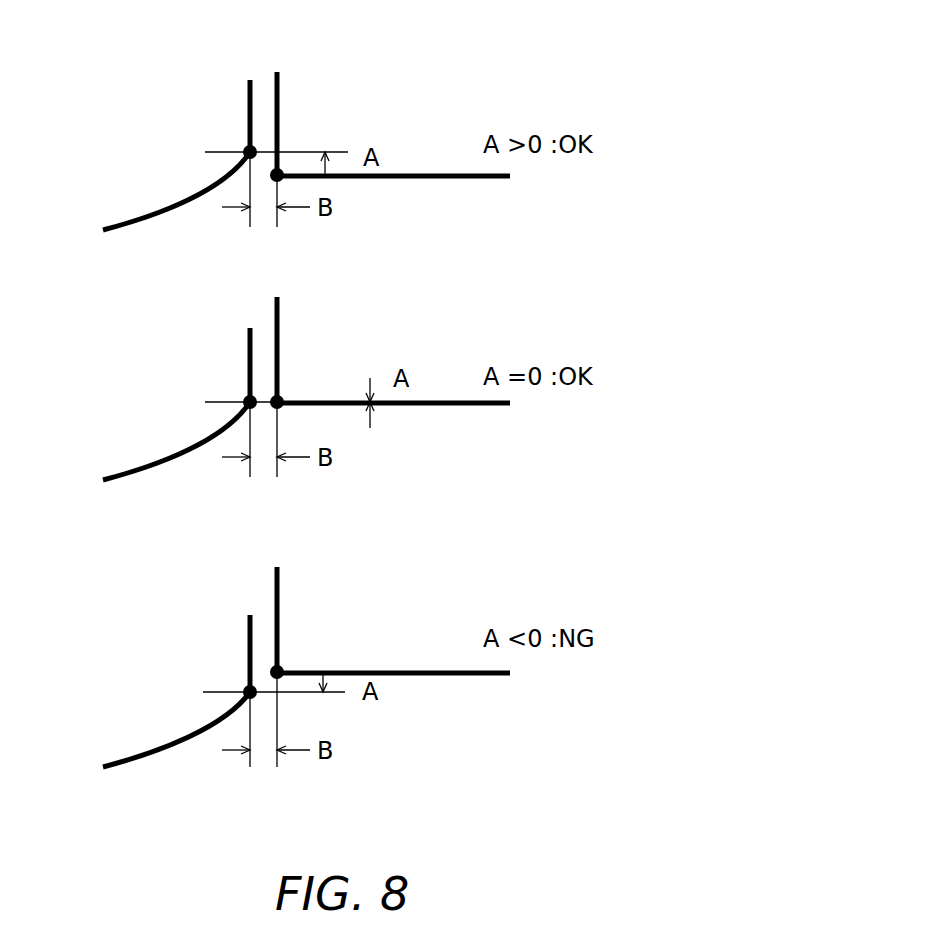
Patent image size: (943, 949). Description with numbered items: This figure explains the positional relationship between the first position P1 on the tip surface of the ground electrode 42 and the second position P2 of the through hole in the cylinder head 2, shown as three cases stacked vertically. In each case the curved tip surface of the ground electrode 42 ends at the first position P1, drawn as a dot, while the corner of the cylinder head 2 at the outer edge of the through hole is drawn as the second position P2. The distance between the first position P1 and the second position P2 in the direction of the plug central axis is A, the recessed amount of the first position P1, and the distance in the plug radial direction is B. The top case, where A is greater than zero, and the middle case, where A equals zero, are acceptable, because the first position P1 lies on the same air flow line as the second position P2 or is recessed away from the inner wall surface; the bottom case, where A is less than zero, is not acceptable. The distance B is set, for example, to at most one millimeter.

The ground electrode 42 is at (153, 150).
The cylinder head 2 is at (367, 97).
The first position P1 is at (250, 152).
The second position P2 is at (277, 175).